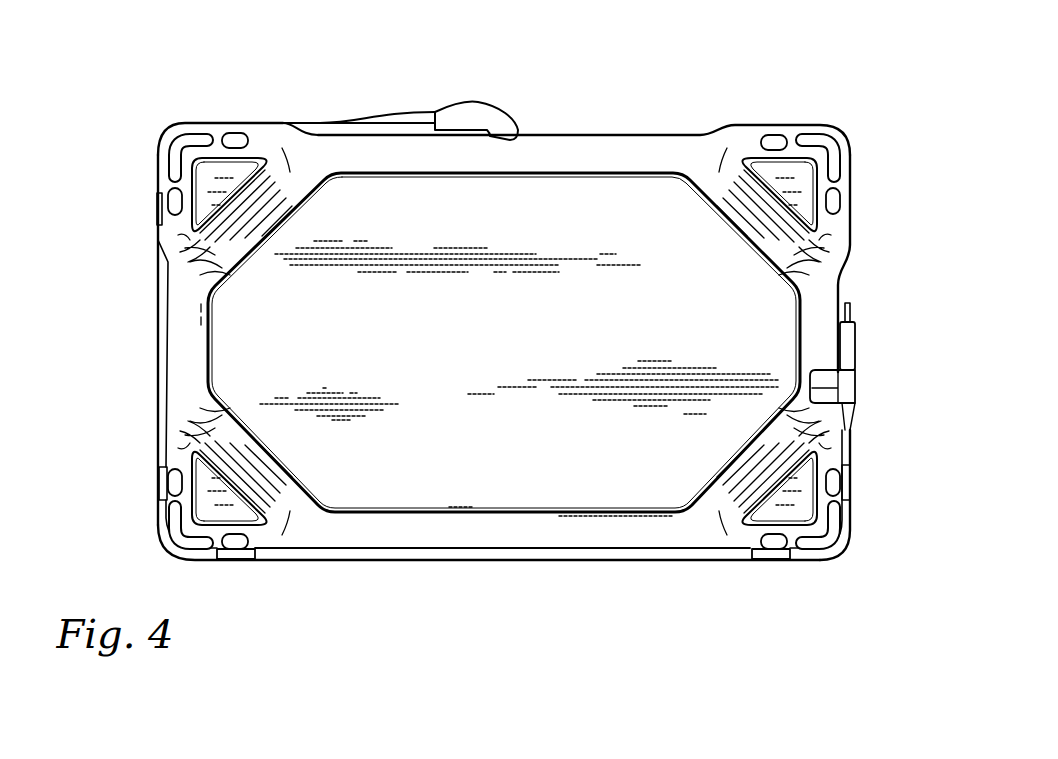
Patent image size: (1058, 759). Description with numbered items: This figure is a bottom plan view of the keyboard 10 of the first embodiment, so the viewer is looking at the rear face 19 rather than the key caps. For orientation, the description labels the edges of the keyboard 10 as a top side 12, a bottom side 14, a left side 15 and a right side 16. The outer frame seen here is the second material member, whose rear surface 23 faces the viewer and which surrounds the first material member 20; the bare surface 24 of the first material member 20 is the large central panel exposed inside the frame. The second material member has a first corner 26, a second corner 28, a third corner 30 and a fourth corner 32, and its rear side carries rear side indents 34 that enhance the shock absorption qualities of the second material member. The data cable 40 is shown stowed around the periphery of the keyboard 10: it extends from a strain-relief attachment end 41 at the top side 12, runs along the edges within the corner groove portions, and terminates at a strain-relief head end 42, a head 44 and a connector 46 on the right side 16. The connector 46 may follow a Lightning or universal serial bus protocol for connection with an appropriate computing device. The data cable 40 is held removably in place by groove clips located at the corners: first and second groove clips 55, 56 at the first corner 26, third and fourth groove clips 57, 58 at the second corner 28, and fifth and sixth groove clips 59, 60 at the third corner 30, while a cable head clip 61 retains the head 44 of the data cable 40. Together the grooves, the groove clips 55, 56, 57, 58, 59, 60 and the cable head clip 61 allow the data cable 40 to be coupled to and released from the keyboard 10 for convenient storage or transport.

The keyboard 10 is at (738, 33).
The top side 12 is at (715, 95).
The bottom side 14 is at (625, 615).
The left side 15 is at (895, 242).
The right side 16 is at (108, 300).
The rear face 19 is at (570, 82).
The first material member 20 is at (471, 346).
The rear surface 23 is at (273, 137).
The bare surface 24 is at (645, 207).
The first corner 26 is at (153, 100).
The second corner 28 is at (150, 568).
The third corner 30 is at (853, 565).
The fourth corner 32 is at (858, 125).
The rear side indents 34 is at (180, 160).
The data cable 40 is at (405, 112).
The strain-relief attachment end 41 is at (480, 102).
The strain-relief head end 42 is at (852, 373).
The head 44 is at (855, 345).
The connector 46 is at (848, 308).
The first groove clip 55 is at (243, 123).
The second groove clip 56 is at (158, 207).
The third groove clip 57 is at (162, 484).
The fourth groove clip 58 is at (240, 560).
The fifth groove clip 59 is at (770, 560).
The sixth groove clip 60 is at (850, 485).
The cable head clip 61 is at (838, 388).